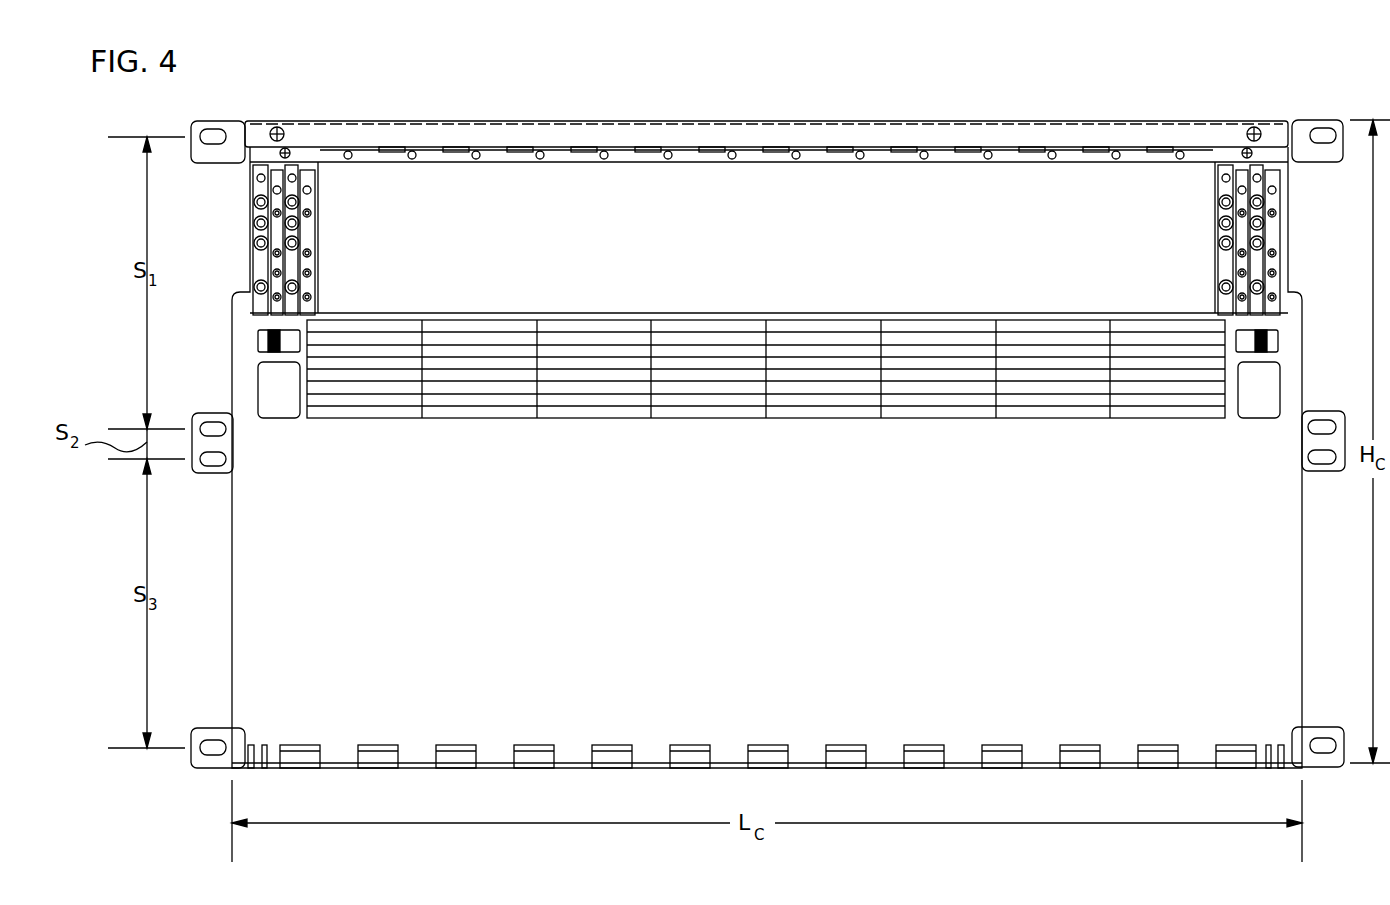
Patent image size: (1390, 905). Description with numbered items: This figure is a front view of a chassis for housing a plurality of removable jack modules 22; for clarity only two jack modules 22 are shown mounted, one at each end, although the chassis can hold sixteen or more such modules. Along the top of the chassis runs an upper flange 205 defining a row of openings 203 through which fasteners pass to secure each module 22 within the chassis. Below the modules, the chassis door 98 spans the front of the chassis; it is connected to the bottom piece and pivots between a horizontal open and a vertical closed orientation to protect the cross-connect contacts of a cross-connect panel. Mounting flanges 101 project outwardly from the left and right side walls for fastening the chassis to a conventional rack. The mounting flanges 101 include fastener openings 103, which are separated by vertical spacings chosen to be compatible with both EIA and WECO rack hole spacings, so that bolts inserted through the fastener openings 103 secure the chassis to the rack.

The jack module 22 is at (332, 239).
The chassis door 98 is at (1300, 592).
The mounting flange 101 is at (1313, 120).
The fastener opening 103 is at (213, 135).
The opening 203 is at (414, 151).
The upper flange 205 is at (508, 153).